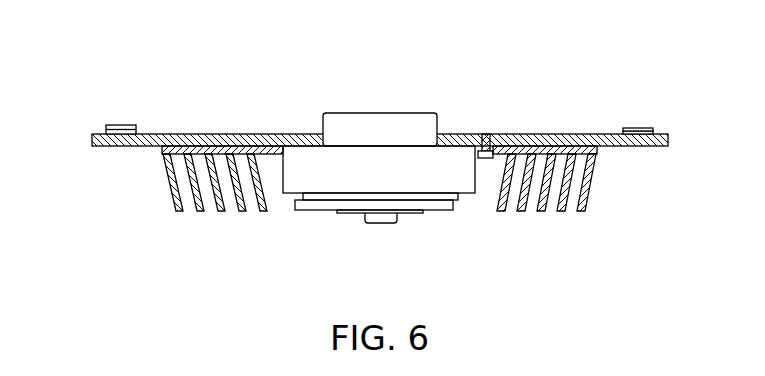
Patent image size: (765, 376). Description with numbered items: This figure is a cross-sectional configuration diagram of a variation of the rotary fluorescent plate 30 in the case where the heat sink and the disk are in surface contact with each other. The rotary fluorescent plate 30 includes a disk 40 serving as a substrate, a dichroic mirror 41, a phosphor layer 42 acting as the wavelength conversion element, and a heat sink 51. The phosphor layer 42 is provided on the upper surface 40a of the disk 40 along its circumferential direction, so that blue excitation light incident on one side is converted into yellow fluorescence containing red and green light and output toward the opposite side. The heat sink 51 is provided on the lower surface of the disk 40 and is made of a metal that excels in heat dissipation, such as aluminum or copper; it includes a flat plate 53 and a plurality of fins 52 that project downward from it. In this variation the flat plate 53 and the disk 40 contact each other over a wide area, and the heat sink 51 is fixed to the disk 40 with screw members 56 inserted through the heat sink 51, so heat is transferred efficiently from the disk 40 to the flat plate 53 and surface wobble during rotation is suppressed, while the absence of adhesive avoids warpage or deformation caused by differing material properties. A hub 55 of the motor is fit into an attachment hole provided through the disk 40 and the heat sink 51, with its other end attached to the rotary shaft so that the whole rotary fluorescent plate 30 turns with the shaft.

The rotary fluorescent plate 30 is at (143, 75).
The disk 40 is at (92, 134).
The upper surface 40a is at (585, 157).
The dichroic mirror 41 is at (621, 134).
The phosphor layer 42 is at (625, 130).
The heat sink 51 is at (117, 152).
The fins 52 is at (172, 187).
The flat plate 53 is at (195, 156).
The hub 55 is at (370, 130).
The screw members 56 is at (483, 159).